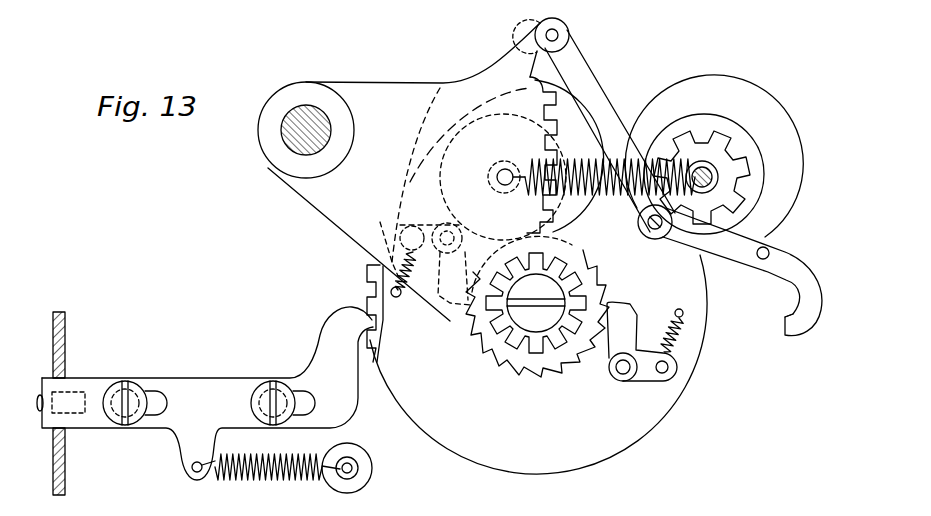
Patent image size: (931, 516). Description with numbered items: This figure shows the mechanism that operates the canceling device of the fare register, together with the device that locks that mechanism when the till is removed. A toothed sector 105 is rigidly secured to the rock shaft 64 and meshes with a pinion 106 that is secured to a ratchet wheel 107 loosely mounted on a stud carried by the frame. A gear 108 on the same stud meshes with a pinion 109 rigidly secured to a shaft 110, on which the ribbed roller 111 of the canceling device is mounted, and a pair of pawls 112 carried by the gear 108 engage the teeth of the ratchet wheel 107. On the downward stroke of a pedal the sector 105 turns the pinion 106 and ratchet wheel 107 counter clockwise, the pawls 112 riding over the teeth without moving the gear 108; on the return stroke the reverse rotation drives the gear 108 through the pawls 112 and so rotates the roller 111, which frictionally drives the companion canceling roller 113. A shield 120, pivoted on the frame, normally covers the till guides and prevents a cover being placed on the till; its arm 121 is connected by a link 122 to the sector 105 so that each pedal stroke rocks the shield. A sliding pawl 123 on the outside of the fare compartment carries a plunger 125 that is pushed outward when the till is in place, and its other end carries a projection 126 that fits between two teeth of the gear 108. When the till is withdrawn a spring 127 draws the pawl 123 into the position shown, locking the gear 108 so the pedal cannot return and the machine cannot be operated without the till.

The rock shaft 64 is at (302, 116).
The toothed sector 105 is at (420, 67).
The pinion 106 is at (537, 341).
The ratchet wheel 107 is at (563, 357).
The gear 108 is at (630, 427).
The pinion 109 is at (705, 148).
The shaft 110 is at (719, 182).
The roller 111 is at (781, 143).
The pawls 112 is at (626, 318).
The canceling roller 113 is at (566, 206).
The shield 120 is at (803, 304).
The arm 121 is at (690, 249).
The link 122 is at (588, 80).
The sliding pawl 123 is at (243, 348).
The plunger 125 is at (68, 392).
The projection 126 is at (374, 314).
The spring 127 is at (248, 477).